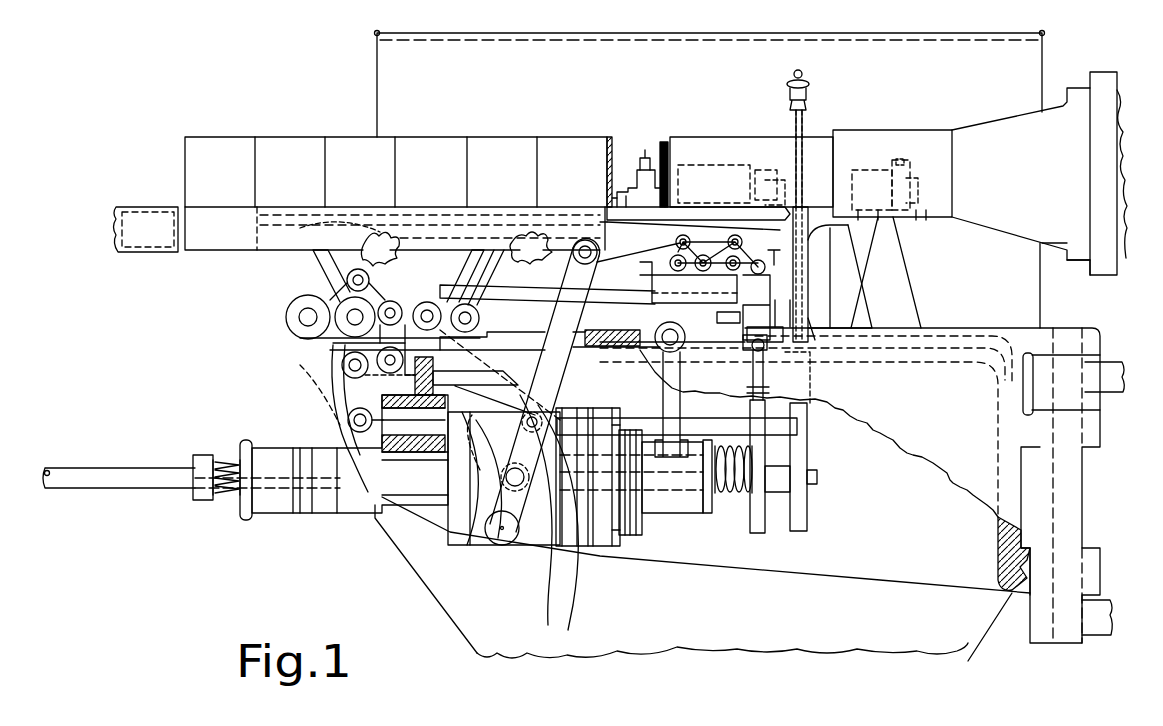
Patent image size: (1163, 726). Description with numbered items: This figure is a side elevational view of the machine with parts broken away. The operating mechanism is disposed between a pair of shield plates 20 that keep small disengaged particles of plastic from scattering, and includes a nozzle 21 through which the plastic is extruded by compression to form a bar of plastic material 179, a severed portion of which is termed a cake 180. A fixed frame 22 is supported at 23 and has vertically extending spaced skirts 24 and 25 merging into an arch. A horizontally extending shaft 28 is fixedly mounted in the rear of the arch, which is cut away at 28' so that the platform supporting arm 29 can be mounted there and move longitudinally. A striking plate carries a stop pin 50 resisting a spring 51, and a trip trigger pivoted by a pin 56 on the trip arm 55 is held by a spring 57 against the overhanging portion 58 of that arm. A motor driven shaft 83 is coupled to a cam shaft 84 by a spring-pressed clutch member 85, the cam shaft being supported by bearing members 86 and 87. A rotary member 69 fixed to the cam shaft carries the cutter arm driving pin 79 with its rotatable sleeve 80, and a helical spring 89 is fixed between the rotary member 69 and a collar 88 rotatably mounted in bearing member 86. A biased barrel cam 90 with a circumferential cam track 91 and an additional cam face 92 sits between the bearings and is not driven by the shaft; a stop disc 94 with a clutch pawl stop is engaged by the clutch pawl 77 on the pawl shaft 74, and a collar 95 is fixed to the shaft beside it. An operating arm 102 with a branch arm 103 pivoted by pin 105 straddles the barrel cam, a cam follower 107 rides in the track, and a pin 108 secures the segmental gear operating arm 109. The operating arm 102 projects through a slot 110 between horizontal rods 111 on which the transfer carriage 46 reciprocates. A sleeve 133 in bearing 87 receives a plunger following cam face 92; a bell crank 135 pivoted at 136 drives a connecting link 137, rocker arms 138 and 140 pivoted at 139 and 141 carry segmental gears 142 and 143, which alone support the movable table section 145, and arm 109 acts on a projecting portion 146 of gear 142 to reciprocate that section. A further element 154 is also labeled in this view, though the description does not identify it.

The shield plates 20 is at (938, 58).
The nozzle 21 is at (1013, 137).
The fixed frame 22 is at (1015, 357).
The frame support 23 is at (1092, 370).
The skirt 24 is at (932, 426).
The skirt 25 is at (868, 549).
The shaft 28 is at (806, 404).
The cut-away portion 28' is at (769, 321).
The platform supporting arm 29 is at (812, 275).
The transfer carriage 46 is at (703, 284).
The stop pin 50 is at (802, 302).
The spring 51 is at (690, 215).
The trip arm 55 is at (888, 279).
The pin 56 is at (664, 150).
The spring 57 is at (645, 185).
The overhanging portion 58 is at (609, 175).
The rotary member 69 is at (757, 540).
The pawl shaft 74 is at (795, 429).
The clutch pawl 77 is at (571, 420).
The cutter arm driving pin 79 is at (825, 441).
The rotatable sleeve 80 is at (778, 492).
The motor driven shaft 83 is at (131, 480).
The cam shaft 84 is at (715, 492).
The spring-pressed clutch member 85 is at (298, 500).
The bearing member 86 is at (672, 501).
The bearing member 87 is at (410, 502).
The collar 88 is at (634, 527).
The helical spring 89 is at (740, 500).
The barrel cam 90 is at (476, 546).
The cam track 91 is at (470, 492).
The cam face 92 is at (458, 527).
The stop disc 94 is at (572, 548).
The collar 95 is at (610, 548).
The operating arm 102 is at (556, 368).
The branch arm 103 is at (518, 493).
The pin 105 is at (503, 546).
The cam follower 107 is at (532, 522).
The pin 108 is at (563, 546).
The segmental gear operating arm 109 is at (338, 384).
The slot 110 is at (505, 337).
The rods 111 is at (509, 300).
The sleeve 133 is at (380, 441).
The bell crank 135 is at (340, 383).
The pivot 136 is at (342, 364).
The connecting link 137 is at (330, 340).
The rocker arm 138 is at (287, 322).
The pivot 139 is at (300, 312).
The rocker arm 140 is at (440, 310).
The pivot 141 is at (404, 305).
The segmental gear 142 is at (318, 277).
The segmental gear 143 is at (500, 268).
The movable section 145 is at (222, 237).
The projecting portion 146 is at (305, 262).
The roller 154 is at (347, 421).
The bar of plastic material 179 is at (822, 142).
The cake 180 is at (556, 158).